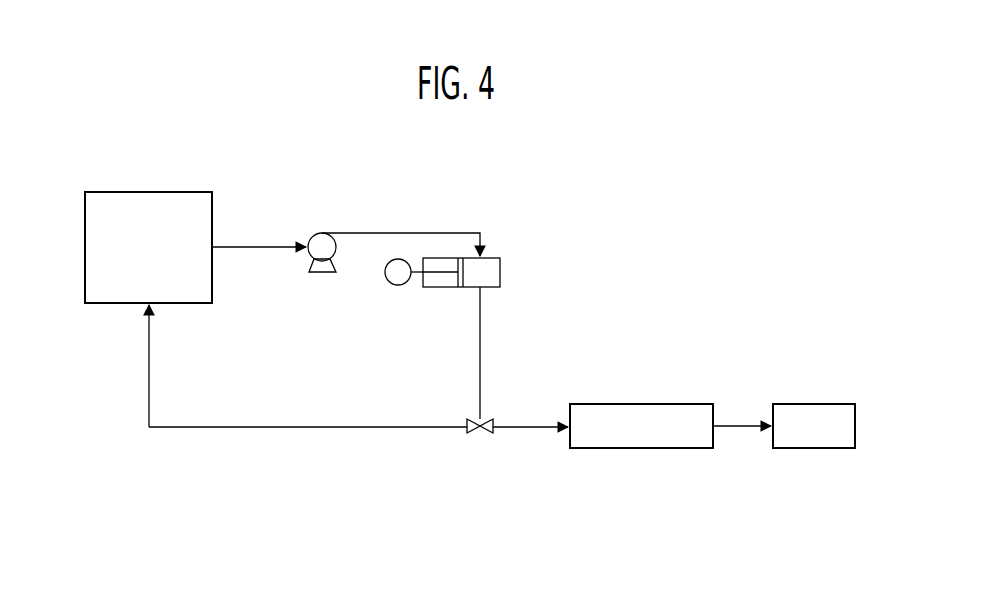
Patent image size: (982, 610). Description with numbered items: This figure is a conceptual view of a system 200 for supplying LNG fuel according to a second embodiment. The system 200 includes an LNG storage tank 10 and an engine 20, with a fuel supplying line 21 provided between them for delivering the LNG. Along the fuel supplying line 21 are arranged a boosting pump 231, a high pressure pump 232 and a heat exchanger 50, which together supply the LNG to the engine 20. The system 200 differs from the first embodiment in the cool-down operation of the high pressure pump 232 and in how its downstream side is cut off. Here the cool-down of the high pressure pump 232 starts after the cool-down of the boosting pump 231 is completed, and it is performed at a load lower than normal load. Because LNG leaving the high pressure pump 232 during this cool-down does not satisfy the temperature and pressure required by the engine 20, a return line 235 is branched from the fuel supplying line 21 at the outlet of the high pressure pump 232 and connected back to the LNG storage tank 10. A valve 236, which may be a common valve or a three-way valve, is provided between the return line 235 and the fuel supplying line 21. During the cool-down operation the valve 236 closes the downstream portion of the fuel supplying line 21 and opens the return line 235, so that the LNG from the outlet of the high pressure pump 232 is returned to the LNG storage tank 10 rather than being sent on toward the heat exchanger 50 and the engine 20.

The LNG storage tank 10 is at (145, 192).
The engine 20 is at (812, 404).
The fuel supplying line 21 is at (242, 250).
The heat exchanger 50 is at (670, 404).
The system for supplying LNG fuel 200 is at (712, 188).
The boosting pump 231 is at (322, 272).
The high pressure pump 232 is at (438, 287).
The return line 235 is at (292, 428).
The valve 236 is at (484, 434).